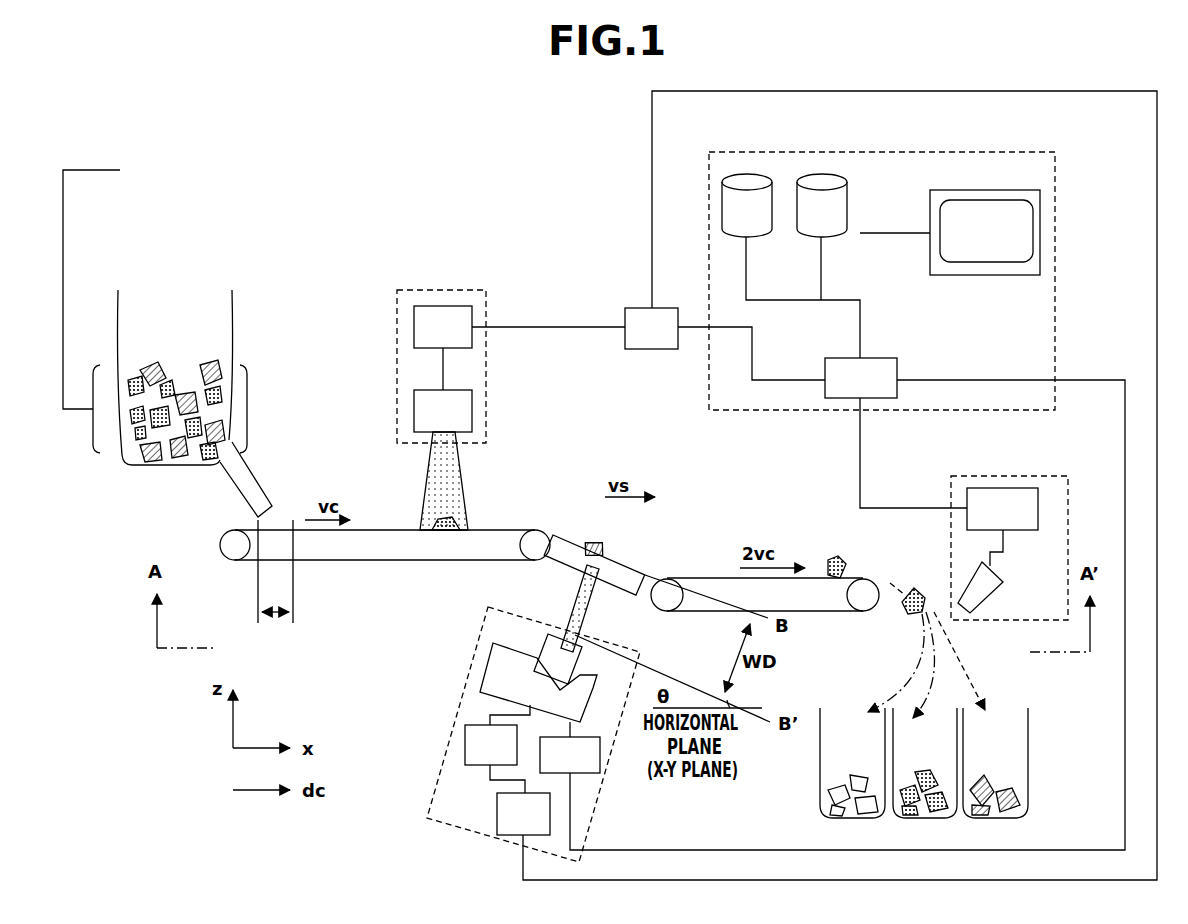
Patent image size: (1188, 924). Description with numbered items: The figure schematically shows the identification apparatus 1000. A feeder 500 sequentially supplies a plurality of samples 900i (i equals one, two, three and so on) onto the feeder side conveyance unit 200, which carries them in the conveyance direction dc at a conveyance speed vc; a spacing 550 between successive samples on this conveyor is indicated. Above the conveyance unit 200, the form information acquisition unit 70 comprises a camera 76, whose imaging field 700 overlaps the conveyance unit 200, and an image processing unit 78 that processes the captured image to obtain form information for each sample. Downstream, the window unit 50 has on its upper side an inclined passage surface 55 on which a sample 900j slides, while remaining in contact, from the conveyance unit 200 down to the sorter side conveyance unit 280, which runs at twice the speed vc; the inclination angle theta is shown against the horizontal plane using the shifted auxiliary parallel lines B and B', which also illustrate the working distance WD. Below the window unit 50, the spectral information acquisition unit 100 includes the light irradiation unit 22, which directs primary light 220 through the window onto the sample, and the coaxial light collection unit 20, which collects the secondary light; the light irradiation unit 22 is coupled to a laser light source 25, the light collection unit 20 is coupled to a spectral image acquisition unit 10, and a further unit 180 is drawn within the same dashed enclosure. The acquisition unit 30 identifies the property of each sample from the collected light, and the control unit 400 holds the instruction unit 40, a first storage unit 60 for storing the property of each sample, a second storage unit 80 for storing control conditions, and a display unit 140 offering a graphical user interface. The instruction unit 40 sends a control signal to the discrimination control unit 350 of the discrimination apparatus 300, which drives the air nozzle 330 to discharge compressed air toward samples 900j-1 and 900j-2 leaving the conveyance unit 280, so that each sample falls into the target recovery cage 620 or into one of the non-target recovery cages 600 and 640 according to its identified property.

The identification apparatus 1000 is at (134, 98).
The sample 900i is at (204, 306).
The feeder 500 is at (176, 333).
The feeder side conveyance unit 200 is at (220, 542).
The interval 550 is at (276, 614).
The form information acquisition unit 70 is at (486, 366).
The image processing unit 78 is at (414, 327).
The camera 76 is at (414, 410).
The imaging field 700 is at (427, 478).
The acquisition unit 30 is at (651, 349).
The control unit 400 is at (918, 152).
The first storage unit 60 is at (748, 175).
The second storage unit 80 is at (822, 175).
The display unit 140 is at (930, 215).
The instruction unit 40 is at (886, 358).
The discrimination apparatus 300 is at (1008, 476).
The discrimination control unit 350 is at (1025, 530).
The air nozzle 330 is at (985, 600).
The window unit 50 is at (565, 562).
The object being sorted 900j is at (600, 538).
The passage surface 55 is at (656, 562).
The sorter side conveyance unit 280 is at (870, 612).
The object on second conveyor 900j-1 is at (834, 556).
The object falling into container 900j-2 is at (912, 590).
The primary light 220 is at (592, 605).
The spectral information acquisition unit 100 is at (457, 712).
The light collection unit 20 is at (485, 666).
The light irradiation unit 22 is at (575, 690).
The spectral image acquisition unit 10 is at (465, 745).
The drive unit 180 is at (497, 815).
The light source 25 is at (582, 773).
The non-target recovery cage B 640 is at (829, 759).
The target recovery cage 620 is at (945, 735).
The non-target recovery cage A 600 is at (1015, 770).